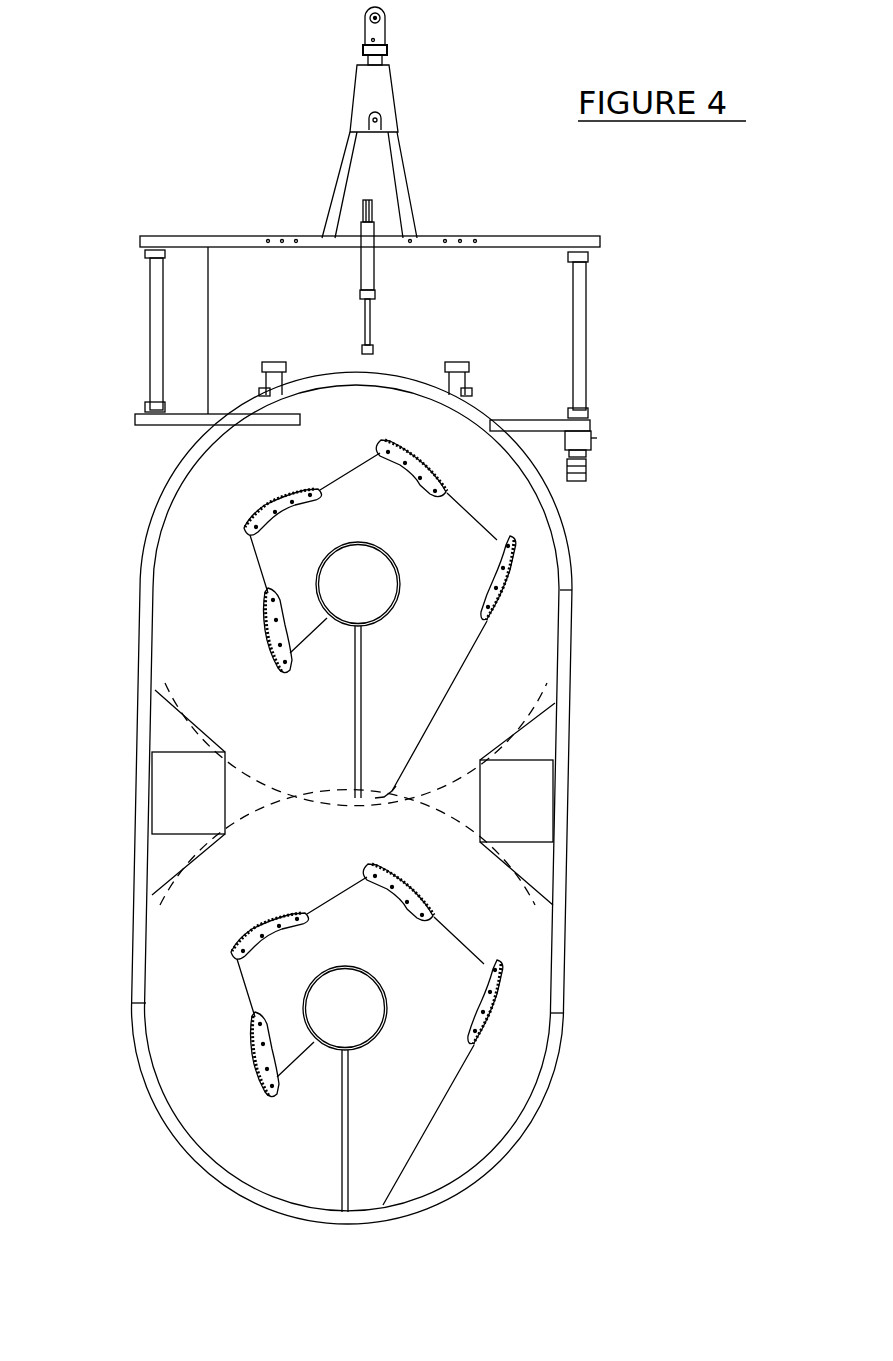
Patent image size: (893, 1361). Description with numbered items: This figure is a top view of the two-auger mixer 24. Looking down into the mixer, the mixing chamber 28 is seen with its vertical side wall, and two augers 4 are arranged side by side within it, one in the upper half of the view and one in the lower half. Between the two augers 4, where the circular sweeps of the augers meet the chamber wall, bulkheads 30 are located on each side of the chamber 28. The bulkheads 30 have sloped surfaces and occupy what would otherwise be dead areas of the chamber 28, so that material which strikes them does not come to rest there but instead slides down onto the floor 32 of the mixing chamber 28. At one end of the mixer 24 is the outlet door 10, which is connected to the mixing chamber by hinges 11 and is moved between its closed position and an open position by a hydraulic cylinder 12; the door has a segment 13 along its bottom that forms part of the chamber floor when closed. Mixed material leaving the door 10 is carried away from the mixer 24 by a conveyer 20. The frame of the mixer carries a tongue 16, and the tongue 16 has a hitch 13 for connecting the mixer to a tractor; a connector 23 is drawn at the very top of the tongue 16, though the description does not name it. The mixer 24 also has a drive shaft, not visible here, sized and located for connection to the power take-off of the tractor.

The auger 4 is at (450, 633).
The outlet door 10 is at (310, 368).
The hinges 11 is at (262, 368).
The hydraulic cylinder 12 is at (373, 235).
The hitch 13 is at (365, 390).
The tongue 16 is at (362, 90).
The conveyer 20 is at (533, 265).
The lifting hook 23 is at (381, 31).
The mixer 24 is at (662, 426).
The mixing chamber 28 is at (565, 906).
The bulkheads 30 is at (178, 792).
The floor 32 is at (204, 593).